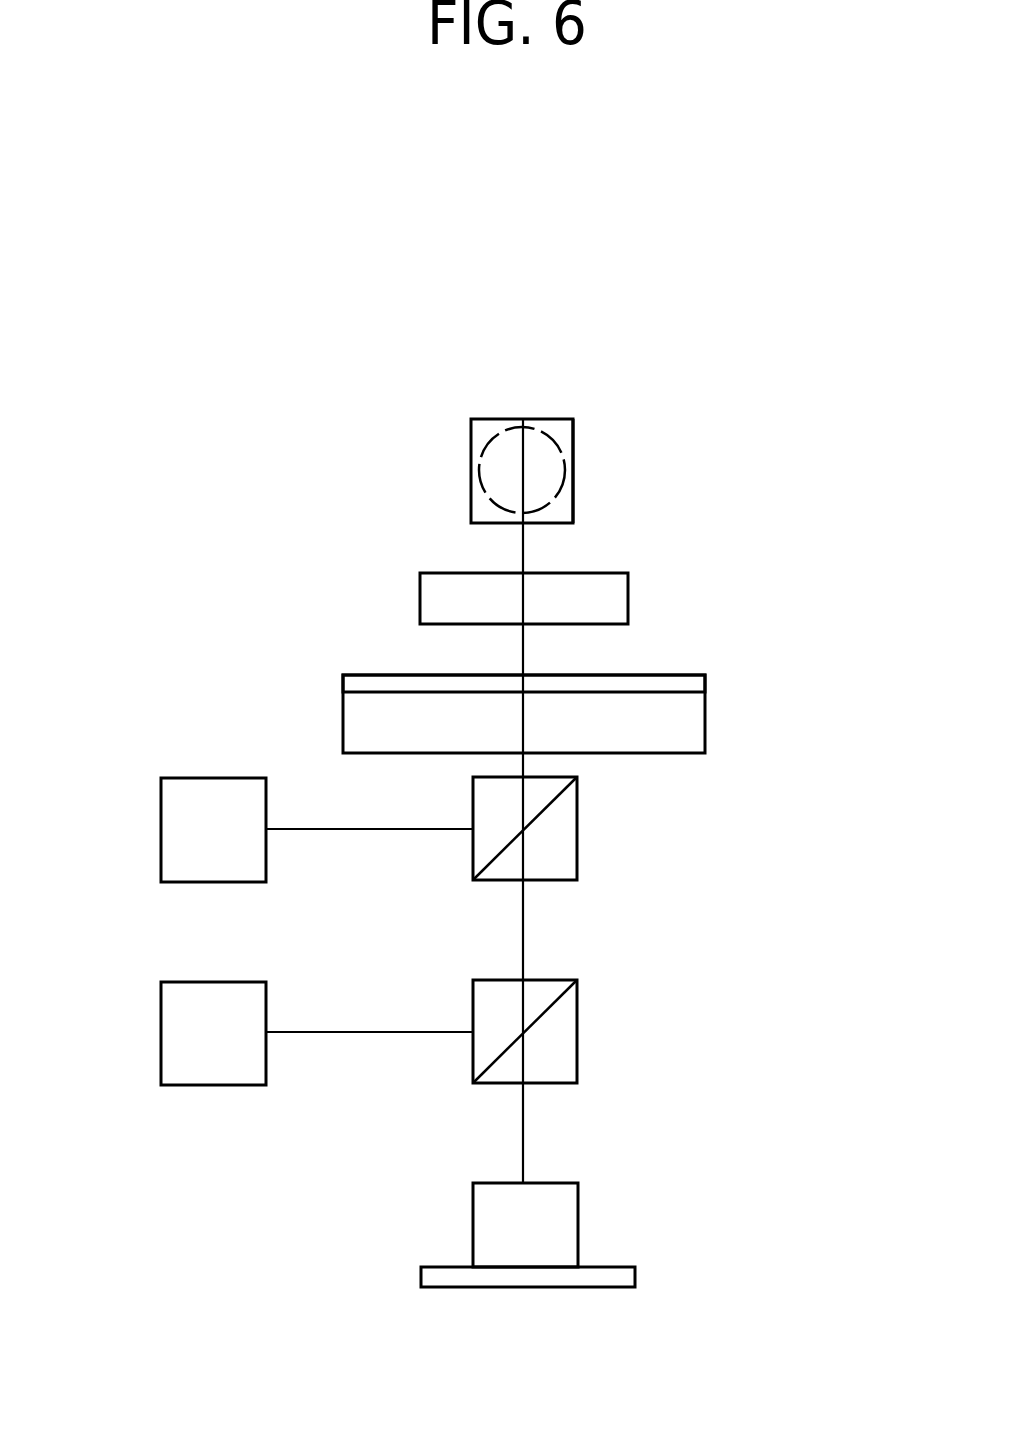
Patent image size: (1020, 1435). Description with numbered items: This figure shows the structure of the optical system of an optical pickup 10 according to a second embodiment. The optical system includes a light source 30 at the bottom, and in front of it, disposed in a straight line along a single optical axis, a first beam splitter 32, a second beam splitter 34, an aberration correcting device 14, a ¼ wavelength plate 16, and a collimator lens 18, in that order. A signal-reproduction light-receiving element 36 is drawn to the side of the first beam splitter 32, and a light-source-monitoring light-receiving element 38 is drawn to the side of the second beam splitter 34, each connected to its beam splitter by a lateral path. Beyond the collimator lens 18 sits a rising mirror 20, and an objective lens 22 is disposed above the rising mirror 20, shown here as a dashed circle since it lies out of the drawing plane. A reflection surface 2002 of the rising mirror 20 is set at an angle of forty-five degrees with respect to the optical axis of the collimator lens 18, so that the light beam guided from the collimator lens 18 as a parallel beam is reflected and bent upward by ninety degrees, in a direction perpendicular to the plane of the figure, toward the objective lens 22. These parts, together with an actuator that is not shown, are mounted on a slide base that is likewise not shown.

The optical pickup 10 is at (706, 255).
The aberration correcting device 14 is at (705, 728).
The ¼ wavelength plate 16 is at (705, 682).
The collimator lens 18 is at (628, 602).
The rising mirror 20 is at (553, 418).
The objective lens 22 is at (472, 433).
The reflection surface 2002 is at (573, 432).
The light source 30 is at (578, 1222).
The first beam splitter 32 is at (577, 1037).
The second beam splitter 34 is at (577, 832).
The signal-reproduction light-receiving element 36 is at (161, 1050).
The light-source-monitoring light-receiving element 38 is at (161, 858).